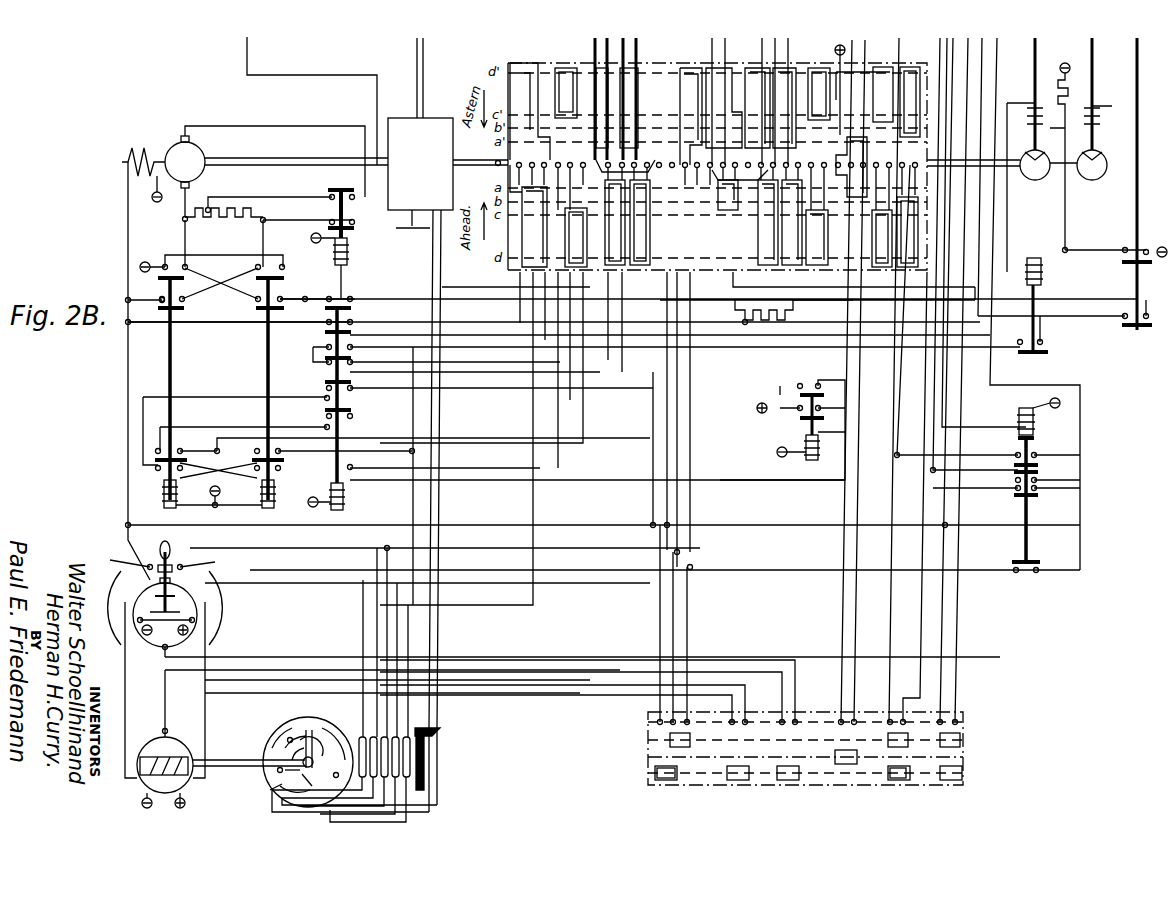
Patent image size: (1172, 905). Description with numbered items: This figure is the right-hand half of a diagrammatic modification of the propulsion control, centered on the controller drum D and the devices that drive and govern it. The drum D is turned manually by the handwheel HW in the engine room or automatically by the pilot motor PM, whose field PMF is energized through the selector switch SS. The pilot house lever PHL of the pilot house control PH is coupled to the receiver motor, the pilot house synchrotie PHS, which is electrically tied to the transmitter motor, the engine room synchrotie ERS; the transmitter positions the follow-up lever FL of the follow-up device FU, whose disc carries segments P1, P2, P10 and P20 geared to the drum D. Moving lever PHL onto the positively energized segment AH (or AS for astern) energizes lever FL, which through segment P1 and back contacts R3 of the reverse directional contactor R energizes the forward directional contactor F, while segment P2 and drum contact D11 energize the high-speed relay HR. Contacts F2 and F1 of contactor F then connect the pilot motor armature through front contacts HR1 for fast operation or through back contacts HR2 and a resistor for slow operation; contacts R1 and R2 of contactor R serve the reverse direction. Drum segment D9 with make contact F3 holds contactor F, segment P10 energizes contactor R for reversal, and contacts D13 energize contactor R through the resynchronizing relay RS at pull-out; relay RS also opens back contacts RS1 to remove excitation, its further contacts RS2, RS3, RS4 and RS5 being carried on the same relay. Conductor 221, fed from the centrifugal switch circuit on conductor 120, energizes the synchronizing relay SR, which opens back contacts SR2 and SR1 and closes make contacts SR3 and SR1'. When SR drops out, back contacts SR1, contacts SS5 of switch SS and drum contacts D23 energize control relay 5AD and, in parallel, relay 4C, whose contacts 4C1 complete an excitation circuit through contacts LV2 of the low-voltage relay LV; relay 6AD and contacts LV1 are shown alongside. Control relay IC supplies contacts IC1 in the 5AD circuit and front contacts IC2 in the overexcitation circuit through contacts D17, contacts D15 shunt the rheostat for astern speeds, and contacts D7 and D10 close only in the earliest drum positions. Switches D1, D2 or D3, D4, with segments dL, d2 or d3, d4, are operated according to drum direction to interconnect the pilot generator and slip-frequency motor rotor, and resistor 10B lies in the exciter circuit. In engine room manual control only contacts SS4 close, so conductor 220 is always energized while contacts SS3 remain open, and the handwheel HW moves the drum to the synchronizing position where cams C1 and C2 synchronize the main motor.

The pilot motor field PMF is at (138, 152).
The pilot motor PM is at (240, 155).
The back contacts of high-speed relay HR2 is at (328, 190).
The front contacts of high-speed relay HR1 is at (328, 220).
The high-speed relay HR is at (347, 250).
The reverse contactor contact R1 is at (166, 262).
The reverse contactor contact R2 is at (186, 303).
The contacts of forward directional contactor F1 is at (283, 266).
The contacts of forward directional contactor F2 is at (278, 302).
The reset relay contact RS5 is at (338, 300).
The reset relay contact RS4 is at (324, 329).
The contacts of resynchronizing relay RS1 is at (326, 345).
The reset relay contact RS2 is at (325, 382).
The reset relay contact RS3 is at (324, 412).
The resynchronizing relay RS is at (341, 514).
The back contacts of reverse directional contactor R3 is at (173, 454).
The contact of forward directional contactor F3 is at (284, 458).
The reverse directional contactor R is at (150, 499).
The forward directional contactor F is at (276, 493).
The handwheel HW is at (410, 228).
The drum contacts D10 is at (524, 66).
The drum switch D3 is at (598, 66).
The drum switch D4 is at (640, 66).
The drum segment D9 is at (696, 66).
The drum contacts D15 is at (726, 66).
The contact segment d3 is at (790, 60).
The contact segment d4 is at (786, 64).
The drum contacts D7 is at (871, 155).
The controller drum D is at (888, 66).
The conductor 221 is at (948, 46).
The drum contact D11 is at (538, 272).
The drum contacts D13 is at (585, 270).
The drum switch D1 is at (616, 270).
The drum switch D2 is at (642, 272).
The drum contacts D17 is at (728, 212).
The drum controller segment dL is at (758, 242).
The contact segment d2 is at (795, 272).
The drum contacts D23 is at (909, 272).
The resistor 10B is at (756, 318).
The control relay 5AD is at (1024, 155).
The clutch lead 6AD is at (1081, 144).
The control cam C1 is at (1028, 180).
The control cam C2 is at (1085, 180).
The control relay IC is at (1149, 184).
The contacts of control relay IC1 is at (1142, 250).
The front contacts of control relay IC2 is at (1122, 328).
The relay 4C is at (1042, 280).
The contacts of relay 4C 4C1 is at (1047, 354).
The contacts of low-voltage relay LV2 is at (798, 384).
The low voltage relay contact LV1 is at (795, 420).
The low-voltage relay LV is at (818, 455).
The conductor 120 is at (840, 503).
The conductor 220 is at (853, 672).
The synchronizing relay SR is at (1003, 299).
The make contacts of synchronizing relay SR1' is at (1047, 453).
The back contacts of synchronizing relay SR2 is at (1038, 474).
The make contacts of synchronizing relay SR3 is at (1036, 496).
The back contacts of synchronizing relay SR1 is at (1038, 579).
The pilot house control PH is at (165, 659).
The pilot house lever PHL is at (170, 552).
The segment AH is at (118, 580).
The segment AS is at (225, 608).
The pilot house synchrotie PHS is at (200, 605).
The engine room synchrotie ERS is at (162, 740).
The segment P10 is at (312, 720).
The segment P1 is at (285, 748).
The segment P2 is at (292, 760).
The follow-up lever FL is at (285, 770).
The follow-up device FU is at (270, 790).
The segment P20 is at (310, 780).
The selector switch SS is at (843, 748).
The selector switch contact SS3 is at (662, 782).
The selector switch contacts SS4 is at (840, 766).
The selector switch contacts SS5 is at (896, 782).